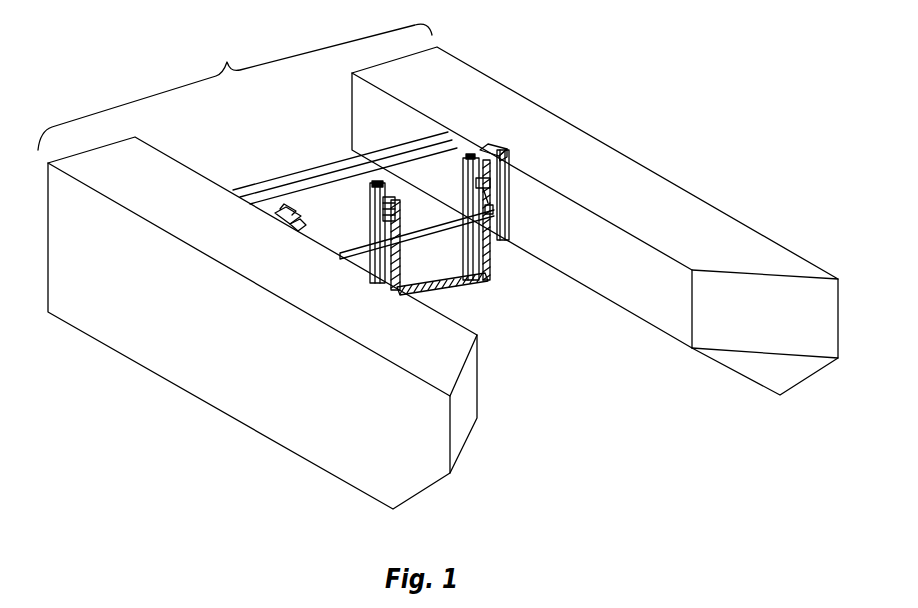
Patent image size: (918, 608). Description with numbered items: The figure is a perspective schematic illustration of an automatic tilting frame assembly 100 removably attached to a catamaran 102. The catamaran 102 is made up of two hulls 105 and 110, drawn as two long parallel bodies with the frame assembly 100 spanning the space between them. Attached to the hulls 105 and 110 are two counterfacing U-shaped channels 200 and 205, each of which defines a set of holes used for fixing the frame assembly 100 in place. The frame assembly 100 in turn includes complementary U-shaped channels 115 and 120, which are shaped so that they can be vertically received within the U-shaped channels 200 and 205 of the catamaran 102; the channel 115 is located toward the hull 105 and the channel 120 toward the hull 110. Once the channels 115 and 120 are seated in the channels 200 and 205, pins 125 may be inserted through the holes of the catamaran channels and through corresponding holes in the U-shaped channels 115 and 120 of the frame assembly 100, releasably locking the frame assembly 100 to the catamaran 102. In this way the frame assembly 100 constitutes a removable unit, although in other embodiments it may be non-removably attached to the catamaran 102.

The automatic tilting frame assembly 100 is at (488, 294).
The catamaran 102 is at (235, 87).
The hull 105 is at (207, 401).
The hull 110 is at (607, 300).
The U-shaped channel 115 is at (290, 212).
The U-shaped channel 120 is at (483, 150).
The pin 125 is at (502, 176).
The U-shaped channel 200 is at (297, 226).
The U-shaped channel 205 is at (503, 158).